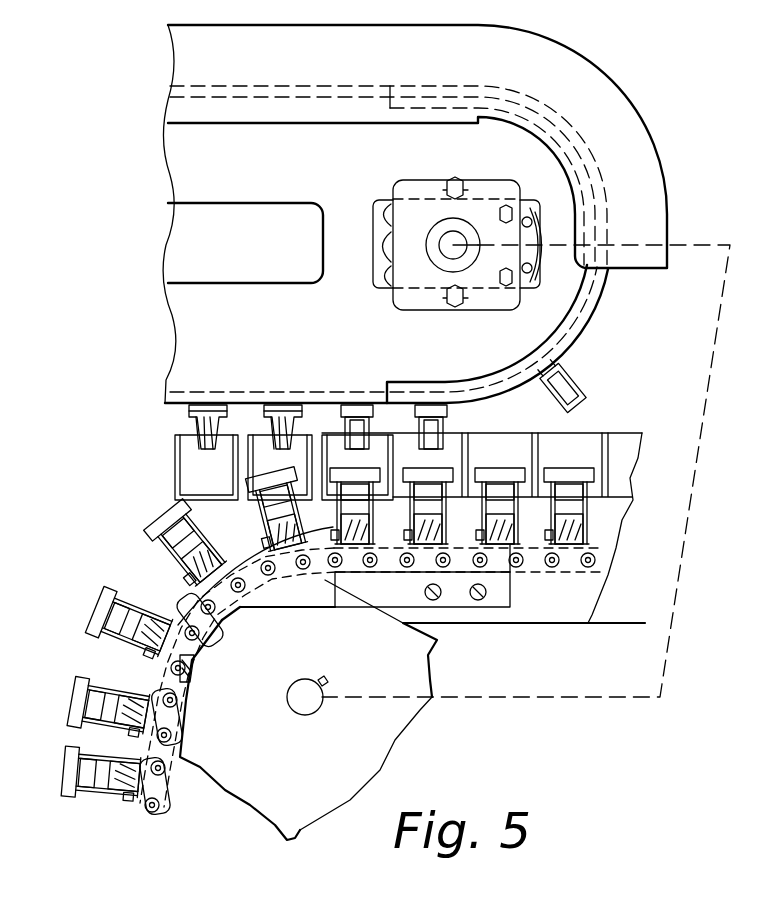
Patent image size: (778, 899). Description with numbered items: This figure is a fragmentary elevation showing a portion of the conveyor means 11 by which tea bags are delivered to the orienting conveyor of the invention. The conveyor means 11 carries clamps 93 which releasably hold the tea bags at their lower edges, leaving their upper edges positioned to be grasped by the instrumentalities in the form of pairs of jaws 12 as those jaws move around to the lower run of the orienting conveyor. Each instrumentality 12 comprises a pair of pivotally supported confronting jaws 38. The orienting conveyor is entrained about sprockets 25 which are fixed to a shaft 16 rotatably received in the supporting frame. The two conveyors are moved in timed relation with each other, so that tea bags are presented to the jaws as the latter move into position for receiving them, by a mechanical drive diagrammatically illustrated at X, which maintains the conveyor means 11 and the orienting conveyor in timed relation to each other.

The conveyor means 11 is at (480, 645).
The pair of jaws 12 is at (595, 382).
The shaft 16 is at (445, 237).
The sprocket 25 is at (378, 270).
The confronting jaw 38 is at (447, 426).
The clamp 93 is at (590, 515).
The mechanical drive X is at (697, 470).